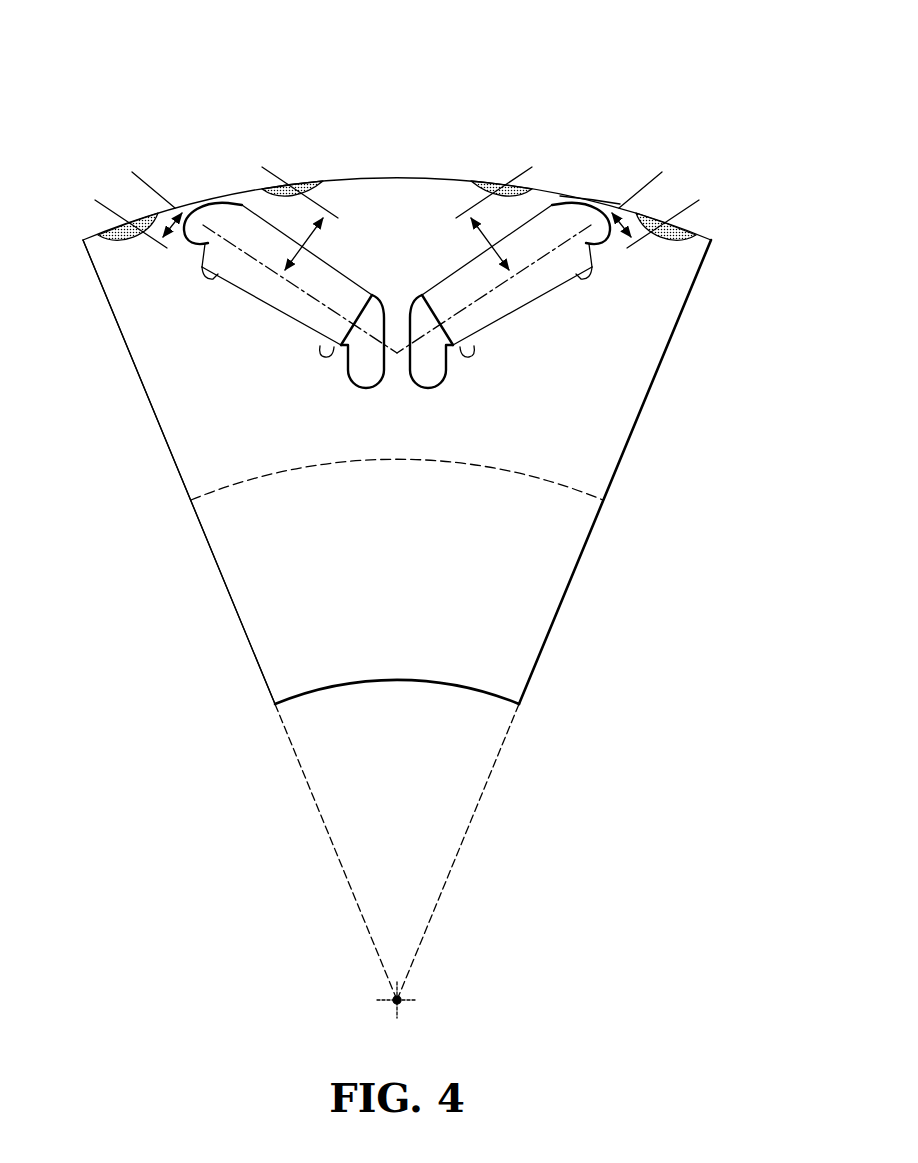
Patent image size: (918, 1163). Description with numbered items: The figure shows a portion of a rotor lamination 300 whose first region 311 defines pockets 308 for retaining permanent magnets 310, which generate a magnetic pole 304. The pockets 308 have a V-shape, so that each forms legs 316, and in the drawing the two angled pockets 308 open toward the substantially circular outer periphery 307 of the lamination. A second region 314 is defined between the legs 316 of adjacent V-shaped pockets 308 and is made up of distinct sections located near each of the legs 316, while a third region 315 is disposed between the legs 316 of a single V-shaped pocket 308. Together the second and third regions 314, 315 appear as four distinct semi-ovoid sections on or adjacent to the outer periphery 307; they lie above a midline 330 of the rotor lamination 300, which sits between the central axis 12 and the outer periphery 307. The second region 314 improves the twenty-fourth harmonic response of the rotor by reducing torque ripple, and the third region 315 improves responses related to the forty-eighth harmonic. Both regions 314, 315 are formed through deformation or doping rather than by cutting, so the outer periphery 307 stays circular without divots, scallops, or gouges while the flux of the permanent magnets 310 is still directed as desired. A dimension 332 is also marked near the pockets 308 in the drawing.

The rotor lamination 300 is at (518, 72).
The magnetic pole 304 is at (400, 176).
The outer periphery 307 is at (590, 198).
The pockets 308 is at (198, 230).
The permanent magnets 310 is at (273, 293).
The first region 311 is at (268, 590).
The second region 314 is at (130, 200).
The third region 315 is at (305, 185).
The legs 316 is at (150, 183).
The midline 330 is at (289, 468).
The slot spacing dimension 332 is at (172, 228).
The central axis 12 is at (405, 990).